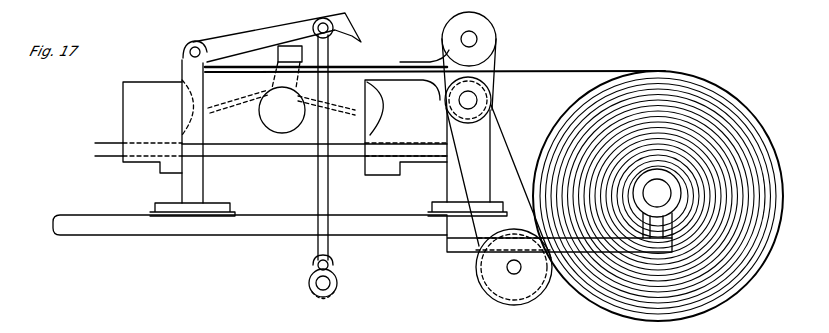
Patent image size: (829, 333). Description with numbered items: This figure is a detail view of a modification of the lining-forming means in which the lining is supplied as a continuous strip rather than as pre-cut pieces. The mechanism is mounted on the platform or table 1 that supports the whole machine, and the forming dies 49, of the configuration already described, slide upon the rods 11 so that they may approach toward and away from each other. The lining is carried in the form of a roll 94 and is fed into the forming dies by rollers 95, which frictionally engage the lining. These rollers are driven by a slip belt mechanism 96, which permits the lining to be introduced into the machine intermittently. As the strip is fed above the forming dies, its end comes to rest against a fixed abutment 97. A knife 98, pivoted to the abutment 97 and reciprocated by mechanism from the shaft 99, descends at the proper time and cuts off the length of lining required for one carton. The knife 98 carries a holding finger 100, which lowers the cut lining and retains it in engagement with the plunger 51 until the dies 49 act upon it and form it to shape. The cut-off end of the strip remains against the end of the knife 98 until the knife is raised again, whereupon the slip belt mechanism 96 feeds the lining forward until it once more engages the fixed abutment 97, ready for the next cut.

The platform or table 1 is at (362, 224).
The rods 11 is at (271, 159).
The forming dies 49 is at (286, 112).
The plunger 51 is at (281, 97).
The roll 94 is at (747, 113).
The rollers 95 is at (484, 67).
The slip belt mechanism 96 is at (515, 158).
The fixed abutment 97 is at (183, 52).
The knife 98 is at (362, 36).
The shaft 99 is at (338, 287).
The holding finger 100 is at (290, 46).